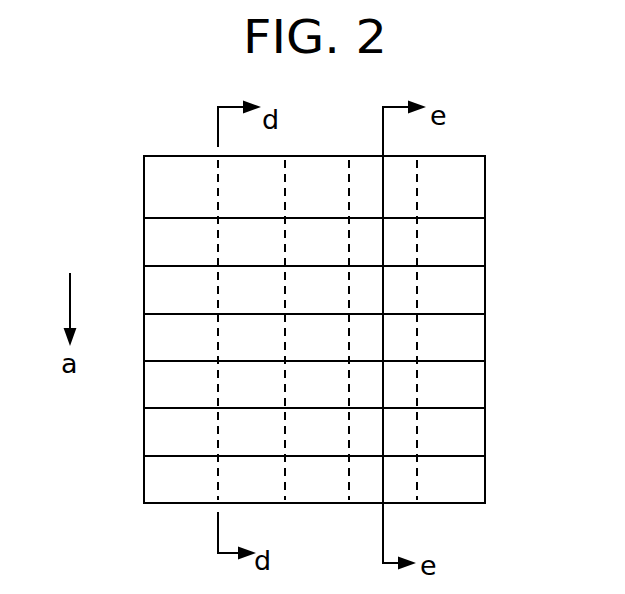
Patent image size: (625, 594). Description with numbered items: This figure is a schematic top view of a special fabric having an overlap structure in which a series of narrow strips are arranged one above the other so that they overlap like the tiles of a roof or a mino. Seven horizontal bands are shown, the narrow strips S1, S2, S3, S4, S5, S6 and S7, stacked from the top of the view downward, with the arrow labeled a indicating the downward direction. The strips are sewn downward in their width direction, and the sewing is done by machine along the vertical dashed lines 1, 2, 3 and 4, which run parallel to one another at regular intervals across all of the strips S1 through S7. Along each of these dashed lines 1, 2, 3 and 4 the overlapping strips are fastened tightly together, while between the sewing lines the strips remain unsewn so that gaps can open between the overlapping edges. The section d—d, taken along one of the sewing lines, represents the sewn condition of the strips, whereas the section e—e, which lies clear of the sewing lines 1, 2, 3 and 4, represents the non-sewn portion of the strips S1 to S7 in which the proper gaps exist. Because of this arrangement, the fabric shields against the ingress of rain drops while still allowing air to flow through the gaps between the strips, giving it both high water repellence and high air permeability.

The dashed sewing line 1 is at (218, 432).
The dashed sewing line 2 is at (285, 478).
The dashed sewing line 3 is at (349, 482).
The dashed sewing line 4 is at (417, 487).
The narrow strip S1 is at (463, 186).
The narrow strip S2 is at (467, 245).
The narrow strip S3 is at (468, 293).
The narrow strip S4 is at (466, 341).
The narrow strip S5 is at (468, 382).
The narrow strip S6 is at (467, 430).
The narrow strip S7 is at (468, 482).